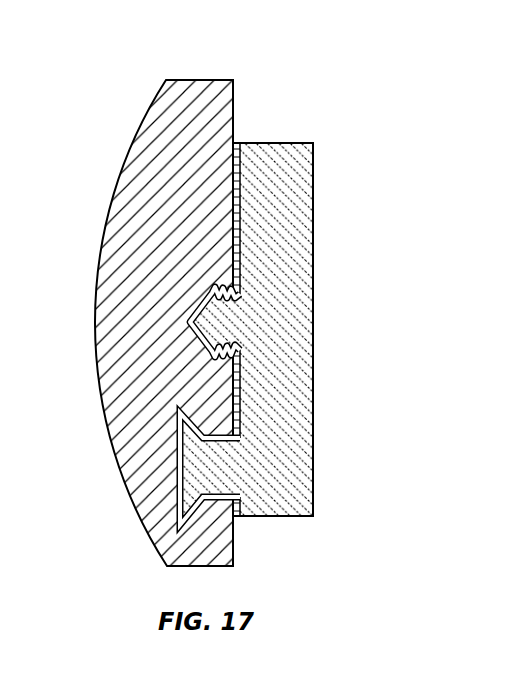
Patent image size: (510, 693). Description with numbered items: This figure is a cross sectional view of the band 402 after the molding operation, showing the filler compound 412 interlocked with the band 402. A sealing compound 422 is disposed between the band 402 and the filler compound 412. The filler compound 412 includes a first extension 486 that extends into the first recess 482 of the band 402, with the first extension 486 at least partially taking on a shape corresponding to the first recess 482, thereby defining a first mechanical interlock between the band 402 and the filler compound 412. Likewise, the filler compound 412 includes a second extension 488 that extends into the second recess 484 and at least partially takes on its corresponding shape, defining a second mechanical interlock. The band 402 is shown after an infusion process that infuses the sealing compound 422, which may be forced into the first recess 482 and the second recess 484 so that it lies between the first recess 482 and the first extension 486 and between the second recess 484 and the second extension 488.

The band 402 is at (196, 208).
The filler compound 412 is at (313, 223).
The sealing compound 422 is at (240, 145).
The first recess 482 is at (200, 352).
The second recess 484 is at (187, 482).
The first extension 486 is at (196, 322).
The second extension 488 is at (185, 462).